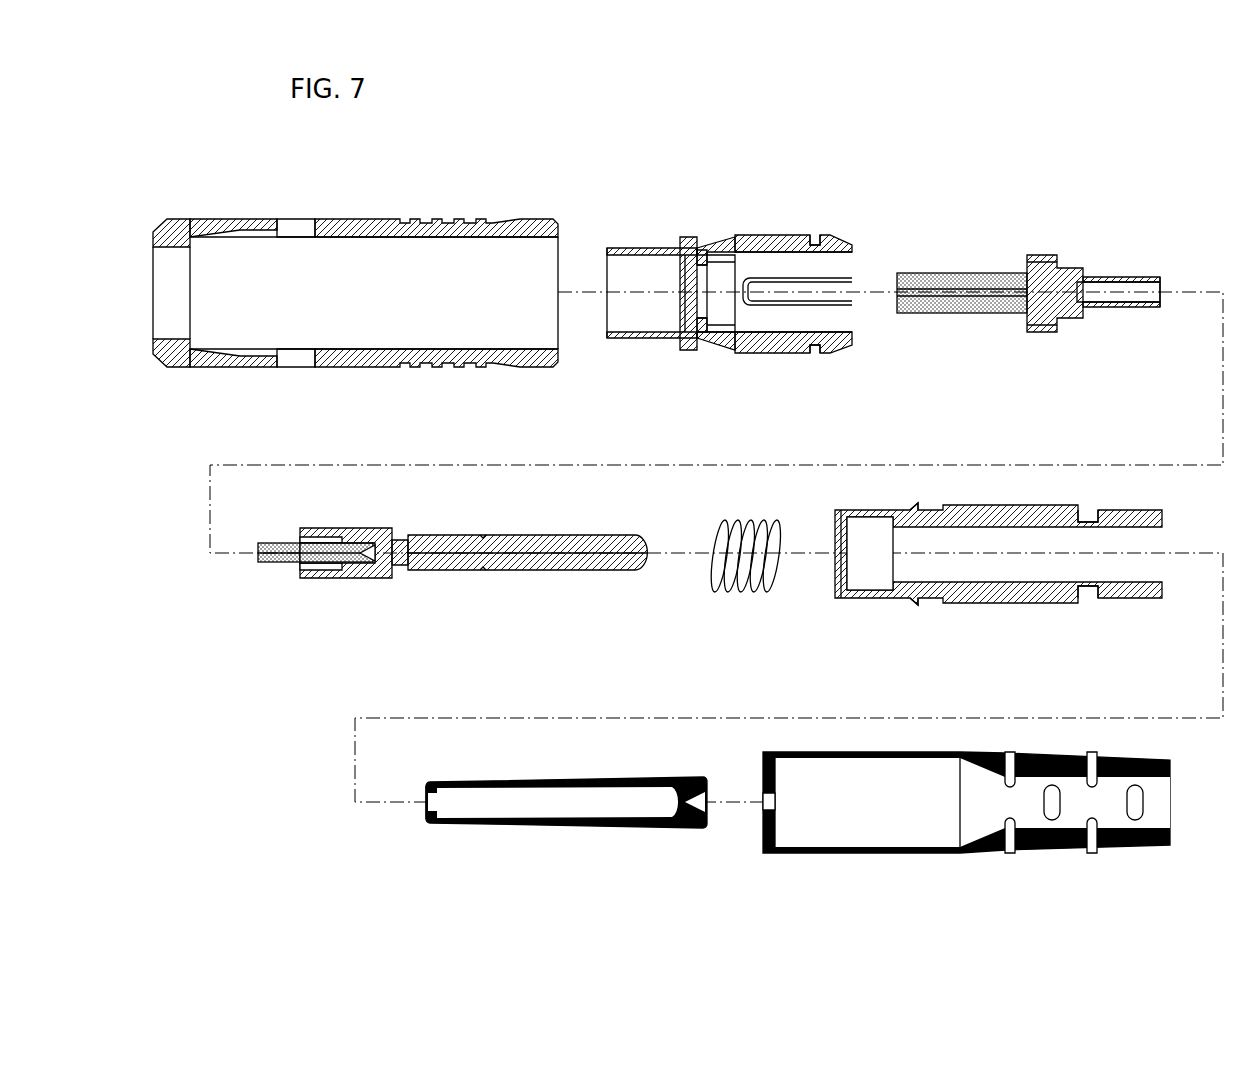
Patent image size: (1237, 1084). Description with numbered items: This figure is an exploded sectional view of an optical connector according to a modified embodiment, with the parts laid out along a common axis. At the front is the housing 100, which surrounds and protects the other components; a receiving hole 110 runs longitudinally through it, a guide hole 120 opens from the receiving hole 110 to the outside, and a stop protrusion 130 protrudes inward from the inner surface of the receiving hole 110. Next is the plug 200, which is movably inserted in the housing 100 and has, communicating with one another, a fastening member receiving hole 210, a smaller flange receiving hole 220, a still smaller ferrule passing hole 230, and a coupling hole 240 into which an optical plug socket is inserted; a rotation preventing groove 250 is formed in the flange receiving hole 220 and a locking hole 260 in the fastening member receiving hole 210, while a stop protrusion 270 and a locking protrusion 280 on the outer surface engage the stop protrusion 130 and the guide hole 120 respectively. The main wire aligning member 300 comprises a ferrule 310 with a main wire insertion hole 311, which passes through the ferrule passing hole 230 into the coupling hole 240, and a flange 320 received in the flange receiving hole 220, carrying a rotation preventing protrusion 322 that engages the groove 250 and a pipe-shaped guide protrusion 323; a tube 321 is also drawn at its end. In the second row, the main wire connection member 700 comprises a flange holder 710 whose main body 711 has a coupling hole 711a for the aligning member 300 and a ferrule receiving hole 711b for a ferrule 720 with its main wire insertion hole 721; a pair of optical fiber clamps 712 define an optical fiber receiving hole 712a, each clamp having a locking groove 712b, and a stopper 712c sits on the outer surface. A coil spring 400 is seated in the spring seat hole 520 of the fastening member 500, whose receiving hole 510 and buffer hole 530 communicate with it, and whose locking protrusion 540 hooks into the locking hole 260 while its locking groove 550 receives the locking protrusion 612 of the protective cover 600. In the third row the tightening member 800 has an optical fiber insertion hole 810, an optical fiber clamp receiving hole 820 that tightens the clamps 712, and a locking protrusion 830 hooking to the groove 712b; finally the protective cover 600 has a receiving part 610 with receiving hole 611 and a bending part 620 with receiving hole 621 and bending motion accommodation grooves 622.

The housing 100 is at (355, 288).
The receiving hole 110 is at (462, 270).
The guide hole 120 is at (297, 355).
The stop protrusion 130 is at (172, 368).
The plug 200 is at (751, 294).
The fastening member receiving hole 210 is at (795, 330).
The flange receiving hole 220 is at (722, 275).
The ferrule passing hole 230 is at (703, 310).
The coupling hole 240 is at (642, 320).
The rotation preventing groove 250 is at (737, 345).
The locking hole 260 is at (815, 348).
The stop protrusion 270 is at (688, 236).
The locking protrusion 280 is at (770, 238).
The main wire aligning member 300 is at (1043, 288).
The ferrule 310 is at (925, 312).
The main wire insertion hole 311 is at (980, 300).
The flange 320 is at (1065, 320).
The pin tube 321 is at (1083, 268).
The rotation preventing protrusion 322 is at (1042, 333).
The guide protrusion 323 is at (1132, 308).
The spring 400 is at (752, 595).
The fastening member 500 is at (993, 594).
The receiving hole 510 is at (990, 562).
The spring seat hole 520 is at (880, 562).
The buffer hole 530 is at (830, 562).
The locking protrusion 540 is at (935, 600).
The locking groove 550 is at (1090, 598).
The protective cover 600 is at (961, 834).
The receiving part 610 is at (828, 855).
The receiving hole 611 is at (900, 832).
The locking protrusion 612 is at (765, 826).
The bending part 620 is at (1096, 834).
The receiving hole 621 is at (1108, 822).
The bending motion accommodation groove 622 is at (1012, 852).
The main wire connection member 700 is at (435, 585).
The flange holder 710 is at (460, 582).
The main body 711 is at (328, 560).
The coupling hole 711a is at (318, 571).
The ferrule receiving hole 711b is at (365, 565).
The optical fiber clamp 712 is at (532, 608).
The optical fiber receiving hole 712a is at (606, 556).
The locking groove 712b is at (483, 570).
The stopper 712c is at (400, 568).
The ferrule 720 is at (310, 614).
The main wire insertion hole 721 is at (285, 556).
The tightening member 800 is at (550, 844).
The optical fiber insertion hole 810 is at (690, 829).
The optical fiber clamp receiving hole 820 is at (513, 800).
The locking protrusion 830 is at (420, 806).